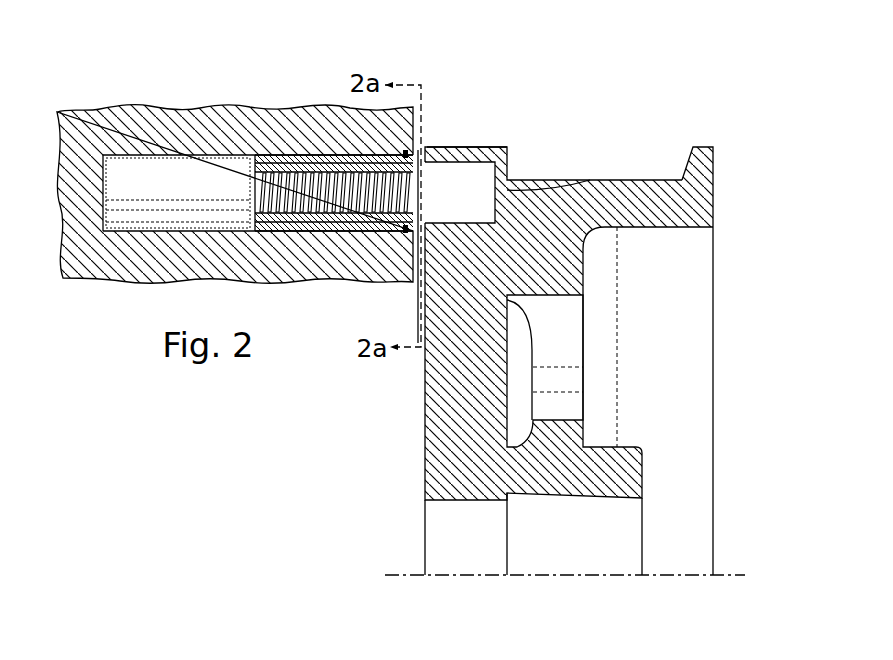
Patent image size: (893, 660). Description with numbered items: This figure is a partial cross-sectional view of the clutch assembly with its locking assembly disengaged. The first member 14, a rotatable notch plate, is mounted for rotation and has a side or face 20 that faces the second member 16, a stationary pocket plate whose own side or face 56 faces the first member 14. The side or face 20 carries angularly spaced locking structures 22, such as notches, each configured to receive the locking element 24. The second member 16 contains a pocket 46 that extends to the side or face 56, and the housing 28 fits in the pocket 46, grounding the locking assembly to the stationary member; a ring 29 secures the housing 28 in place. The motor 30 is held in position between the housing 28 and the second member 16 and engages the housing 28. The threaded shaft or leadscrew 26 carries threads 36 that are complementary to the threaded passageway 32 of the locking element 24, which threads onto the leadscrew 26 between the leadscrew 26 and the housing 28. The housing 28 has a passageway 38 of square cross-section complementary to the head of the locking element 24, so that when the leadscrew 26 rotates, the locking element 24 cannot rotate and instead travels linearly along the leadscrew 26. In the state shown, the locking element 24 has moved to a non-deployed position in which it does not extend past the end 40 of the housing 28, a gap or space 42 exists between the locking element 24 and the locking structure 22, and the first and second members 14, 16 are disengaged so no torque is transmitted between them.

The first member 14 is at (690, 180).
The second member 16 is at (75, 127).
The side or face 20 is at (425, 390).
The locking structure 22 is at (438, 207).
The locking element 24 is at (375, 213).
The threaded shaft or leadscrew 26 is at (288, 182).
The housing 28 is at (311, 164).
The ring 29 is at (409, 152).
The motor 30 is at (153, 173).
The threaded passageway 32 is at (315, 210).
The threads 36 is at (353, 196).
The passageway 38 is at (278, 212).
The end 40 is at (406, 233).
The gap or space 42 is at (421, 150).
The pocket 46 is at (128, 163).
The side or face 56 is at (419, 150).